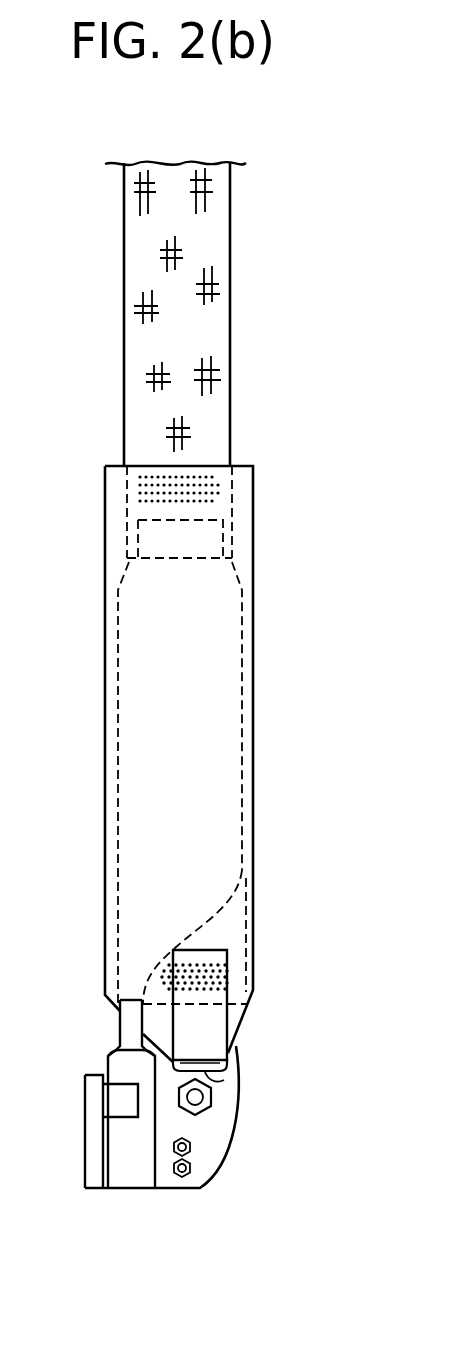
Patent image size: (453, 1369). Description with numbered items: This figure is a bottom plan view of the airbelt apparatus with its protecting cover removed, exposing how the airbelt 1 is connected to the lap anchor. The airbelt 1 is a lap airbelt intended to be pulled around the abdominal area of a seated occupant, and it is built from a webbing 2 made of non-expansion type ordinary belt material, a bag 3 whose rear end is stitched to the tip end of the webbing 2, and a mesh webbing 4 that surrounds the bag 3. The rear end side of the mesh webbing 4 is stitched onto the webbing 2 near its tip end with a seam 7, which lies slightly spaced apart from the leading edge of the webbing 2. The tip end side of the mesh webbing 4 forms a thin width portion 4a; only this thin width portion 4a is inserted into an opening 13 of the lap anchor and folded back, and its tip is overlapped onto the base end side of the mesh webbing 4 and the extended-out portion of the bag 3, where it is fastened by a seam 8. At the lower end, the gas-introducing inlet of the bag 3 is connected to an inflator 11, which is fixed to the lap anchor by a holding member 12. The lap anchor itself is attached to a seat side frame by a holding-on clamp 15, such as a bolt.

The airbelt 1 is at (292, 349).
The webbing 2 is at (214, 233).
The bag 3 is at (243, 656).
The mesh webbing 4 is at (253, 760).
The thin width portion 4a is at (210, 1022).
The seam 7 is at (216, 482).
The seam 8 is at (214, 963).
The inflator 11 is at (127, 1170).
The holding member 12 is at (118, 1101).
The opening 13 is at (212, 1078).
The holding-on clamp 15 is at (212, 1097).